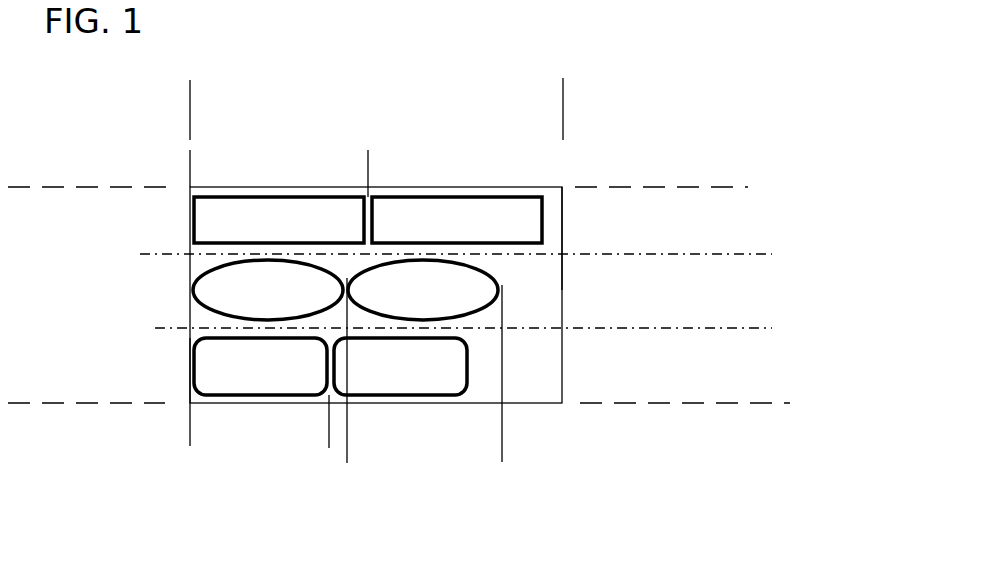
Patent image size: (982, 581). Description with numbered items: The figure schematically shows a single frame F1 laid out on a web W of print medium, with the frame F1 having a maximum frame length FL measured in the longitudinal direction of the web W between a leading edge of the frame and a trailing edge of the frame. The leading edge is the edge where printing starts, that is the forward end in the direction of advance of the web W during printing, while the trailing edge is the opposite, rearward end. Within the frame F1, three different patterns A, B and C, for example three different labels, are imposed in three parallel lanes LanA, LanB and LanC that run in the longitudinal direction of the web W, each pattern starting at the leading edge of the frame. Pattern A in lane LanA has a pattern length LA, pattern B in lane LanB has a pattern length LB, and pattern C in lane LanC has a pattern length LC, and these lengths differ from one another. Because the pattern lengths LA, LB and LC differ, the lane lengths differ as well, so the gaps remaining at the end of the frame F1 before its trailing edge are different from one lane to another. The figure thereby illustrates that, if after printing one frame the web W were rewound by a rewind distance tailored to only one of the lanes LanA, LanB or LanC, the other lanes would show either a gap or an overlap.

The frame F1 is at (502, 396).
The web of print medium W is at (412, 295).
The maximum frame length FL is at (537, 104).
The pattern length of pattern A LA is at (342, 173).
The pattern length of pattern B LB is at (347, 443).
The pattern length of pattern C LC is at (190, 428).
The lane A LanA is at (456, 232).
The lane B LanB is at (463, 303).
The lane C LanC is at (635, 367).
The pattern A is at (368, 220).
The pattern B is at (345, 290).
The pattern C is at (330, 366).